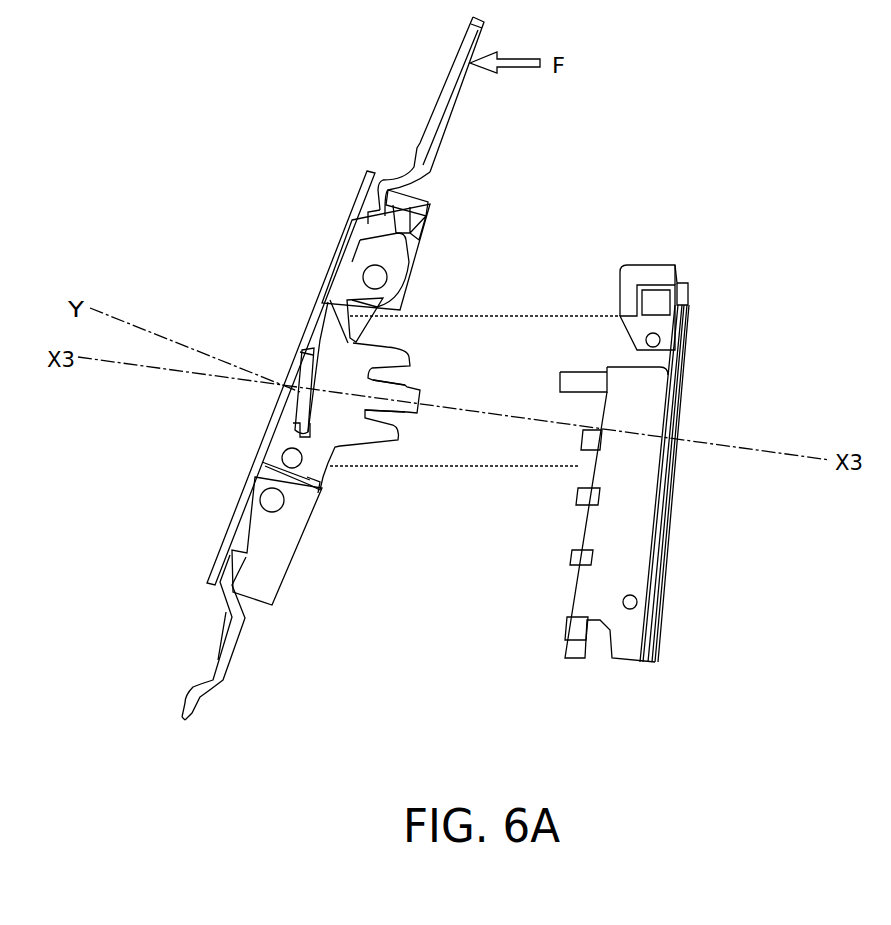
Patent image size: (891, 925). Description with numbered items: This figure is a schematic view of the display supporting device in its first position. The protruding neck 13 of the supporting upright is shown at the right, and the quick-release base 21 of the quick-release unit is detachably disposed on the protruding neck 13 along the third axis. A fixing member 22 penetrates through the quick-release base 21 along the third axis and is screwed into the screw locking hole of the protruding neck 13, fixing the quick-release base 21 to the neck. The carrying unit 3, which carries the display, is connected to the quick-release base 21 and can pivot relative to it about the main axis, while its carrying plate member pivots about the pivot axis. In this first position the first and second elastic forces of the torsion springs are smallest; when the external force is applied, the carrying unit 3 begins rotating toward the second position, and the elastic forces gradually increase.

The carrying unit 3 is at (412, 118).
The protruding neck 13 is at (523, 333).
The quick-release base 21 is at (368, 436).
The fixing member 22 is at (298, 394).